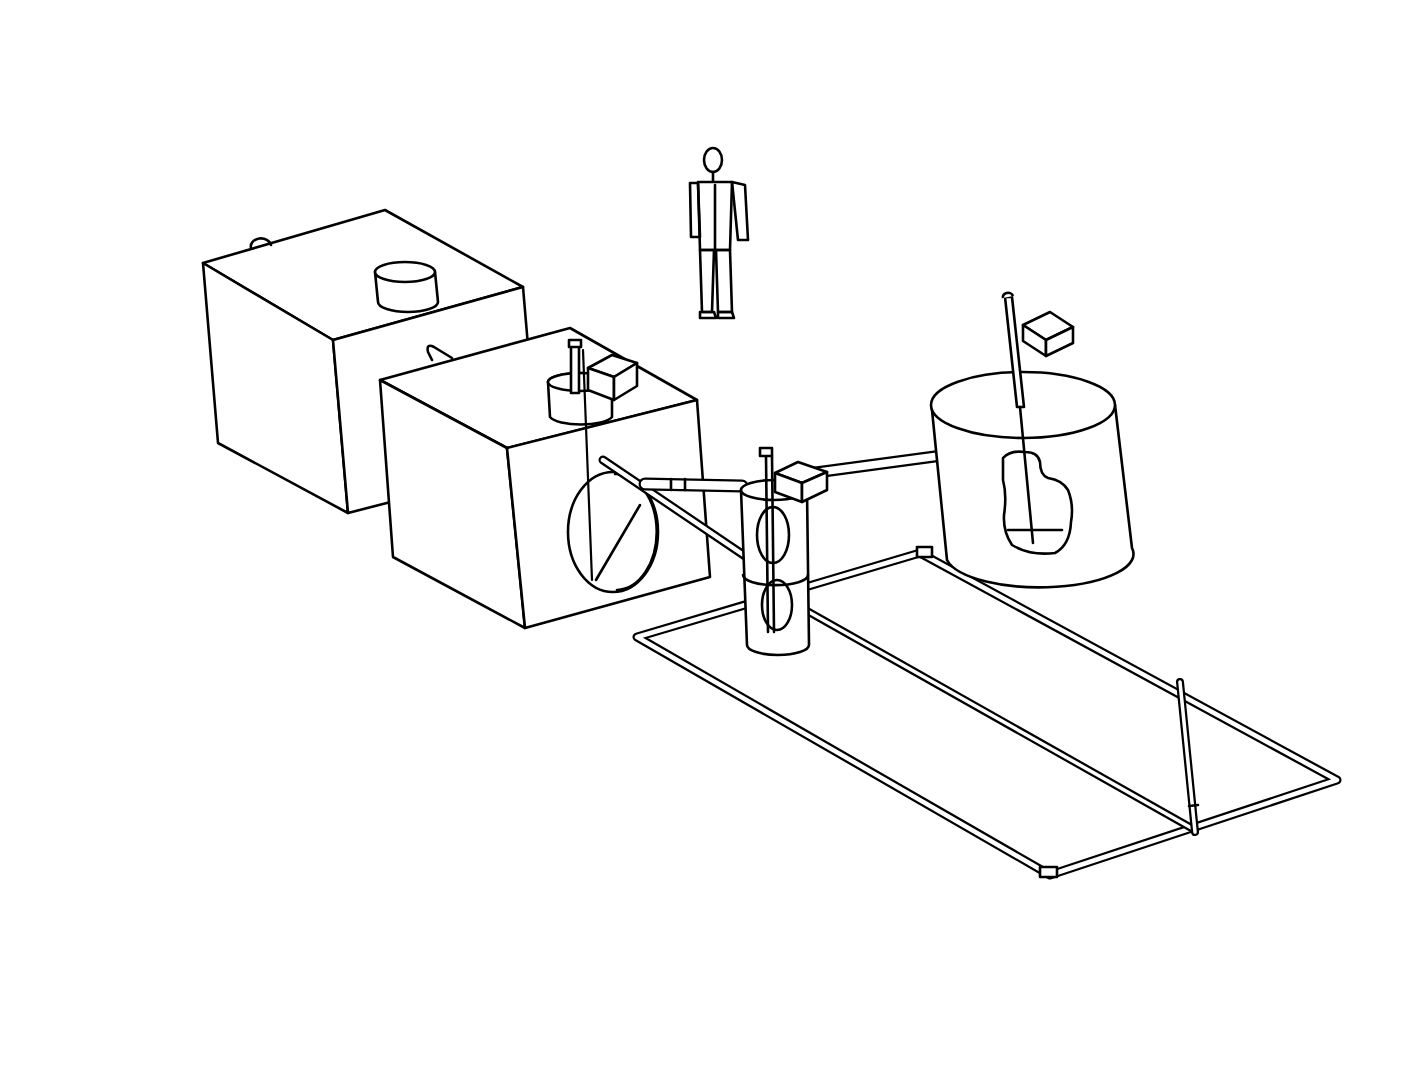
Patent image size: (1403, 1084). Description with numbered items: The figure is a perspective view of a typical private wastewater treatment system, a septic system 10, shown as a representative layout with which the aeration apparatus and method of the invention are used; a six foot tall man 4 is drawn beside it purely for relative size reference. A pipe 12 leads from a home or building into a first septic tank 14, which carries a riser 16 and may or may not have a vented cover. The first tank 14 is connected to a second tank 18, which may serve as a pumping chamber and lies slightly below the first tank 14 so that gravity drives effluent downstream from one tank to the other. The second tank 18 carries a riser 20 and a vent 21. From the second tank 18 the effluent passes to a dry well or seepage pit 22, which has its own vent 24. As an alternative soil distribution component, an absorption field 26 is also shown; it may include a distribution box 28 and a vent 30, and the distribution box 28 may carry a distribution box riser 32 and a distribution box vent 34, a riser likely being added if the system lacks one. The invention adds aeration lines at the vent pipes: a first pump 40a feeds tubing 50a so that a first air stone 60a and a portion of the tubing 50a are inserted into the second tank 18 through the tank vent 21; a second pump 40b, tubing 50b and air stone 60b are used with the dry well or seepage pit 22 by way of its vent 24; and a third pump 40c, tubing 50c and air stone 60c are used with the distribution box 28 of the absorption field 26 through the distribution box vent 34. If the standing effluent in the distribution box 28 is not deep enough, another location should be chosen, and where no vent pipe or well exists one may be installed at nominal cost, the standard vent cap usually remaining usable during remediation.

The septic system 10 is at (960, 170).
The man 4 is at (728, 170).
The pipe 12 is at (258, 242).
The first septic tank 14 is at (252, 395).
The riser 16 is at (402, 270).
The second tank 18 is at (452, 522).
The riser 20 is at (528, 337).
The vent 21 is at (553, 373).
The dry well or seepage pit 22 is at (1093, 497).
The vent 24 is at (1003, 327).
The absorption field 26 is at (813, 750).
The distribution box 28 is at (783, 653).
The vent 30 is at (1197, 733).
The distribution box riser 32 is at (810, 528).
The distribution box vent 34 is at (763, 452).
The first pump 40a is at (620, 352).
The second pump 40b is at (1067, 317).
The third pump 40c is at (820, 462).
The tubing 50a is at (583, 350).
The tubing 50b is at (1017, 307).
The tubing 50c is at (777, 453).
The air stone 60a is at (585, 623).
The air stone 60b is at (1027, 543).
The air stone 60c is at (763, 643).